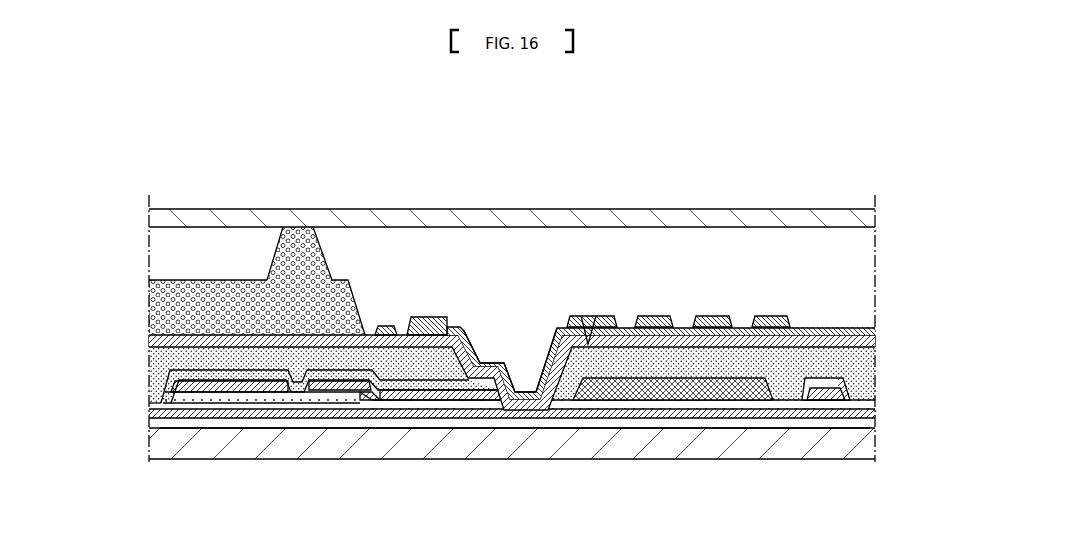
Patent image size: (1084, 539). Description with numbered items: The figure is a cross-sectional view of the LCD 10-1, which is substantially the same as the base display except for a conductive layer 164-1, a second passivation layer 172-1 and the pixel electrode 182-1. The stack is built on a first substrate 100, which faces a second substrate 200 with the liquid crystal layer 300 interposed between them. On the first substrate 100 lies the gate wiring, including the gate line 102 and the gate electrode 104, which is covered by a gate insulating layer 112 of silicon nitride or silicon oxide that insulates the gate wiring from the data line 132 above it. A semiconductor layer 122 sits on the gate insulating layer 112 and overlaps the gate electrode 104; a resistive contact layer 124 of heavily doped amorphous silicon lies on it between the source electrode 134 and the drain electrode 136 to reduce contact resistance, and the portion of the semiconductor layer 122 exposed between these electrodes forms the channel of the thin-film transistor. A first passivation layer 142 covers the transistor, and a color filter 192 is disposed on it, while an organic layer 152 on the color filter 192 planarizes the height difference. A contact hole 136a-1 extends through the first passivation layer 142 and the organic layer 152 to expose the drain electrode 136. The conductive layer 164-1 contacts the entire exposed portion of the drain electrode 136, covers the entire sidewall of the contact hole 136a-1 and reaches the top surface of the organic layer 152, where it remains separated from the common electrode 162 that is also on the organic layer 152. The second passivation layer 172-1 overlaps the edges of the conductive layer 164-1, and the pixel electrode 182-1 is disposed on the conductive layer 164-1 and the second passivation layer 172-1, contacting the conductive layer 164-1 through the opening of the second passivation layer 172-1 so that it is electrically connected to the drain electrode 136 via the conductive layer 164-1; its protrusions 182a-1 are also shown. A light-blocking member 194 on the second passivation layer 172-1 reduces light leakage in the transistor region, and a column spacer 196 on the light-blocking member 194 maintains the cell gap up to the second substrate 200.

The LCD 10-1 is at (520, 168).
The first substrate 100 is at (160, 445).
The gate line 102 is at (192, 427).
The gate electrode 104 is at (297, 428).
The gate insulating layer 112 is at (152, 413).
The semiconductor layer 122 is at (332, 392).
The resistive contact layer 124 is at (353, 383).
The data line 132 is at (847, 385).
The source electrode 134 is at (233, 382).
The drain electrode 136 is at (362, 393).
The contact hole 136a-1 is at (507, 328).
The first passivation layer 142 is at (153, 393).
The organic layer 152 is at (152, 370).
The common electrode 162 is at (873, 341).
The conductive layer 164-1 is at (483, 392).
The second passivation layer 172-1 is at (152, 342).
The pixel electrode 182-1 is at (525, 402).
The protrusion of pixel electrode 182a-1 is at (746, 321).
The color filter 192 is at (692, 397).
The light-blocking member 194 is at (152, 310).
The column spacer 196 is at (298, 236).
The second substrate 200 is at (150, 216).
The liquid crystal layer 300 is at (872, 270).